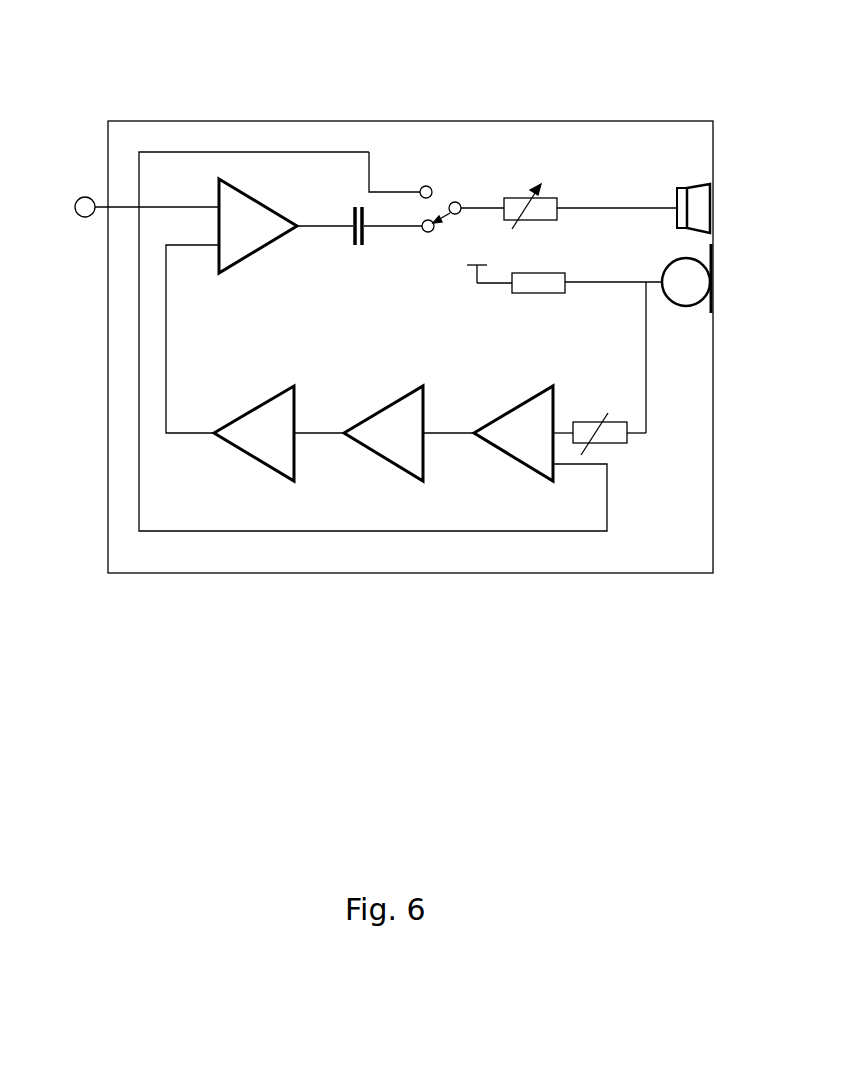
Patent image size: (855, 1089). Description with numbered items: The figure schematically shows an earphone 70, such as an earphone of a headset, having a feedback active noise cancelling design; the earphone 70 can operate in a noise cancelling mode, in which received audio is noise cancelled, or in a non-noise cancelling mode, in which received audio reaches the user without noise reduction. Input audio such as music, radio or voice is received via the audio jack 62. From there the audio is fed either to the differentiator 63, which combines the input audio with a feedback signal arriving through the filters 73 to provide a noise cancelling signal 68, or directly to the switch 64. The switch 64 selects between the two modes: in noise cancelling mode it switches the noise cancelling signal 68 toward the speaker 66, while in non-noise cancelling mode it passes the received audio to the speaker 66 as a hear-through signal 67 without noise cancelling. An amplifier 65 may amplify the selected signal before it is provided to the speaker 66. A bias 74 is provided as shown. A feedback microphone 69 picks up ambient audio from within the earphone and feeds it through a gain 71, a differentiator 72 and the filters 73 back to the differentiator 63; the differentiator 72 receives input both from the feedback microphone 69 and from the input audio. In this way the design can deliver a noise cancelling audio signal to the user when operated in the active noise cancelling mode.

The earphone 70 is at (131, 38).
The audio jack 62 is at (80, 197).
The differentiator 63 is at (242, 190).
The hear-through signal 67 is at (341, 152).
The switch 64 is at (430, 170).
The amplifier 65 is at (526, 196).
The speaker 66 is at (693, 186).
The noise cancelling signal 68 is at (393, 230).
The feedback microphone 69 is at (686, 306).
The bias 74 is at (528, 295).
The gain 71 is at (618, 445).
The differentiator 72 is at (513, 465).
The filters 73 is at (247, 456).